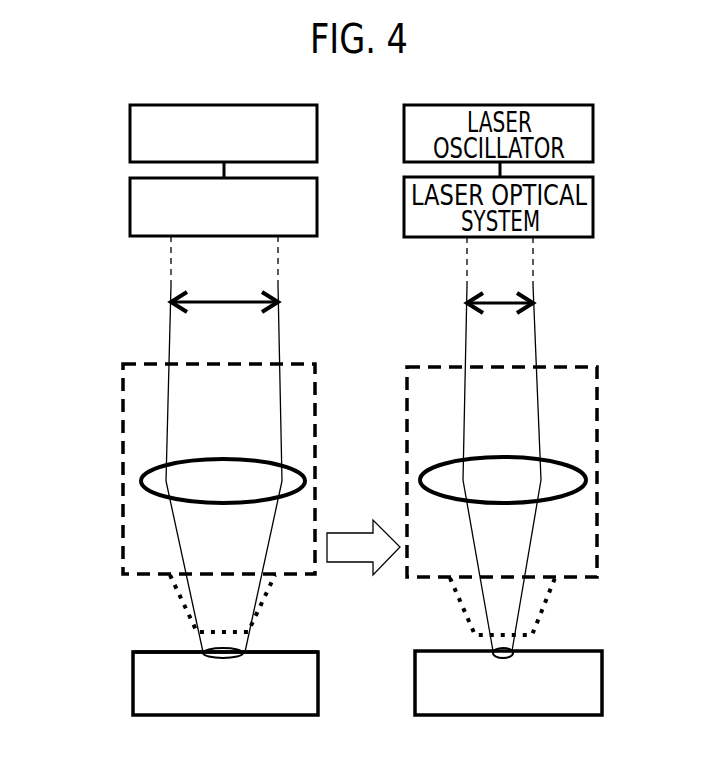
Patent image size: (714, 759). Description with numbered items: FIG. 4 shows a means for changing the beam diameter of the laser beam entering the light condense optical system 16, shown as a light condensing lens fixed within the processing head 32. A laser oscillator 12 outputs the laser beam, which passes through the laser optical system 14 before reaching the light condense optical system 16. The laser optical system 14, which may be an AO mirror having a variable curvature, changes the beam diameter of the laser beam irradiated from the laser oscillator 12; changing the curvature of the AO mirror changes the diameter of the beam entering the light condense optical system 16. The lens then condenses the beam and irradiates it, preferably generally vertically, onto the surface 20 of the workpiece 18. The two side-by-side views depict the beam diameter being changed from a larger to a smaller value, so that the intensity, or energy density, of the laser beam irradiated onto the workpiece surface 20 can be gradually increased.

The laser oscillator 12 is at (130, 128).
The laser optical system 14 is at (130, 203).
The light condense optical system 16 is at (145, 483).
The workpiece 18 is at (104, 681).
The surface 20 is at (152, 652).
The processing head 32 is at (123, 416).